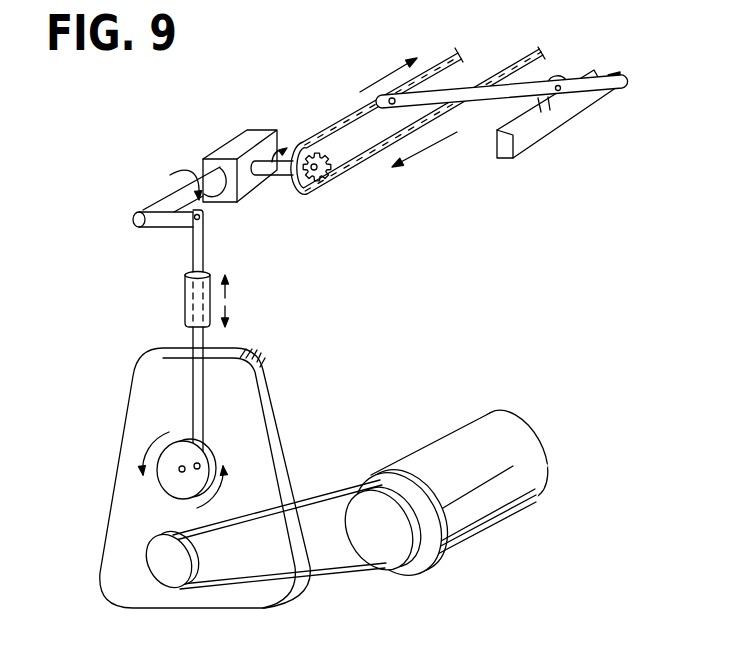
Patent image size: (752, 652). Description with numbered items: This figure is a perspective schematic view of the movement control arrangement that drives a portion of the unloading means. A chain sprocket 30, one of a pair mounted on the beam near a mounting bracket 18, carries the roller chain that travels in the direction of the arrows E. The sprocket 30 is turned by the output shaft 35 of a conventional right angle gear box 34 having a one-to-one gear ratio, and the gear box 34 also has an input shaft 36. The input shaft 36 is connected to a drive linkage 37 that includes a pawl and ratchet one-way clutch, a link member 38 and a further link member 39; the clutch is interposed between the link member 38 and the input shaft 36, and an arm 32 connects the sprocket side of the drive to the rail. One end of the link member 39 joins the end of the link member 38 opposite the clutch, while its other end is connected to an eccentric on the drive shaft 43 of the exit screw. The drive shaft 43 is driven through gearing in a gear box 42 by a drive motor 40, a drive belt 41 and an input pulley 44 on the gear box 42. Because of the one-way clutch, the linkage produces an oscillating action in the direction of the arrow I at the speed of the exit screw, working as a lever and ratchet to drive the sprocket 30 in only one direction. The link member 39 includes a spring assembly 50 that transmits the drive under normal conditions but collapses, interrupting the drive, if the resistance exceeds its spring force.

The mounting bracket 18 is at (577, 120).
The chain sprocket 30 is at (303, 143).
The connecting arm 32 is at (516, 88).
The right angle gear box 34 is at (222, 150).
The output shaft 35 is at (258, 160).
The input shaft 36 is at (157, 205).
The drive linkage 37 is at (128, 238).
The link member 38 is at (162, 228).
The link member 39 is at (203, 252).
The drive motor 40 is at (469, 429).
The drive belt 41 is at (370, 495).
The gear box 42 is at (122, 436).
The drive shaft 43 is at (177, 479).
The input pulley 44 is at (157, 571).
The spring assembly 50 is at (172, 305).
The chain travel direction E is at (363, 90).
The arrow I is at (228, 298).